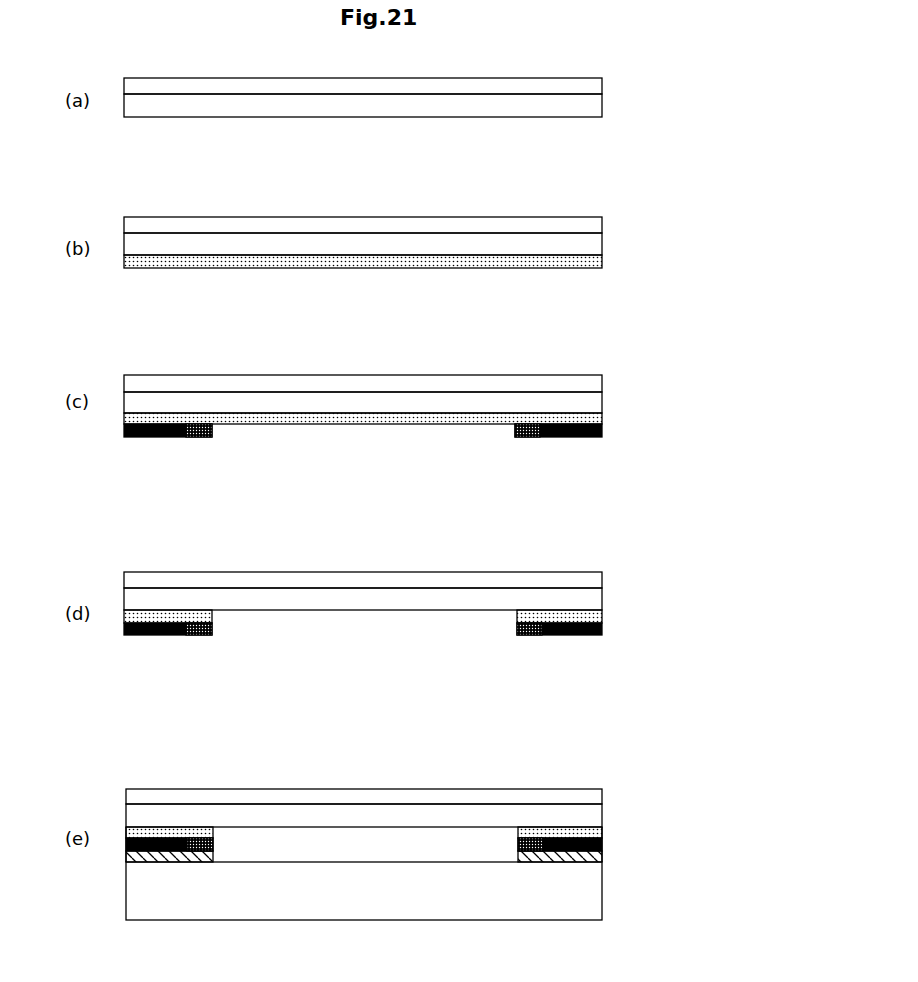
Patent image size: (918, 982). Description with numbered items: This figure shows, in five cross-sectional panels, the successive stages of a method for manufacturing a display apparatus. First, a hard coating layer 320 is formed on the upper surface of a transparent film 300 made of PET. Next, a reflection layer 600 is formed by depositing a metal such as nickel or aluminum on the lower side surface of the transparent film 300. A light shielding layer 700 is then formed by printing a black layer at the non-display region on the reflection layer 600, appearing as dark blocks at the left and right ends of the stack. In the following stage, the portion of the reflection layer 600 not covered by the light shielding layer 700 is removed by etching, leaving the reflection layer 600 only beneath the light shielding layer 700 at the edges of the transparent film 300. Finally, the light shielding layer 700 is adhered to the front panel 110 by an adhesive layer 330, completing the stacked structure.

The front panel 110 is at (440, 910).
The transparent film 300 is at (602, 109).
The hard coating layer 320 is at (602, 87).
The adhesive layer 330 is at (580, 862).
The reflection layer 600 is at (602, 262).
The light shielding layer 700 is at (570, 437).